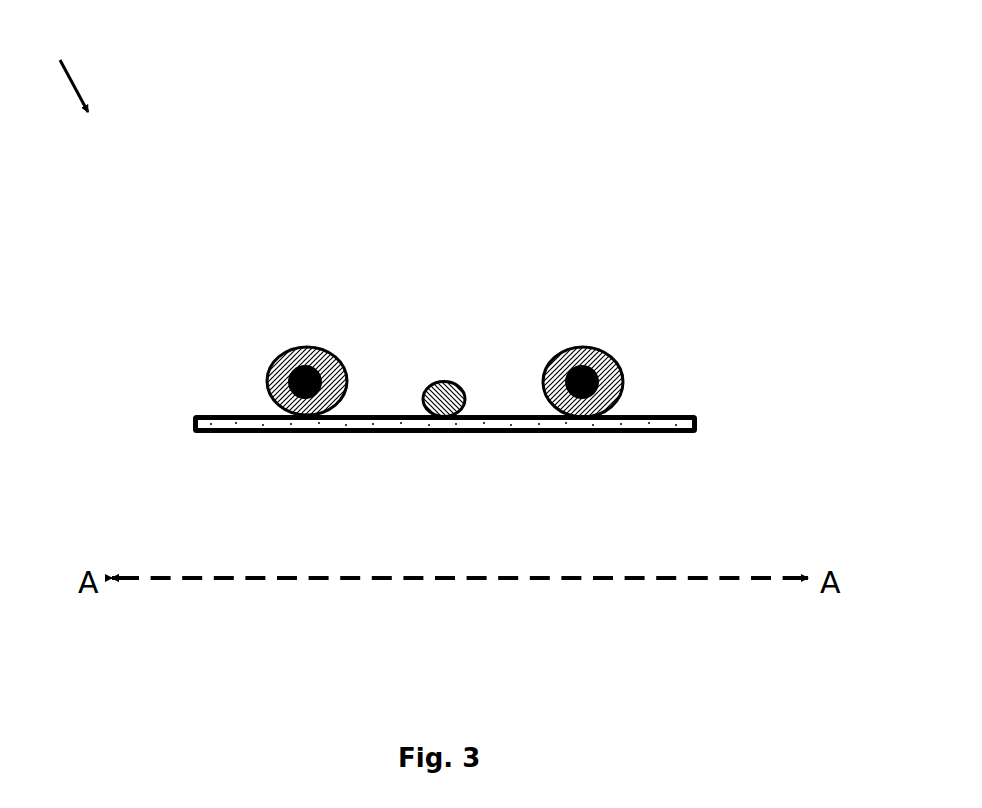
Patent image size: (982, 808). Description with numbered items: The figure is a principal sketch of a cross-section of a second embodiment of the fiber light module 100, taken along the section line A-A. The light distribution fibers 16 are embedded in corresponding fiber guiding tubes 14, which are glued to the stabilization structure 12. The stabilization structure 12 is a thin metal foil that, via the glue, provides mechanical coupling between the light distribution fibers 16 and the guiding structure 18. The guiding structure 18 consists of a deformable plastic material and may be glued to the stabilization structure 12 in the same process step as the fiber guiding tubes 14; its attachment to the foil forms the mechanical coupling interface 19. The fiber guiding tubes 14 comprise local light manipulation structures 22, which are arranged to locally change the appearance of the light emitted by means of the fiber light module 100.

The fiber light module 100 is at (58, 64).
The stabilization structure 12 is at (668, 424).
The fiber guiding tube 14 is at (587, 350).
The light distribution fiber 16 is at (310, 366).
The guiding structure 18 is at (449, 383).
The mechanical coupling interface 19 is at (449, 418).
The local light manipulation structure 22 is at (292, 416).